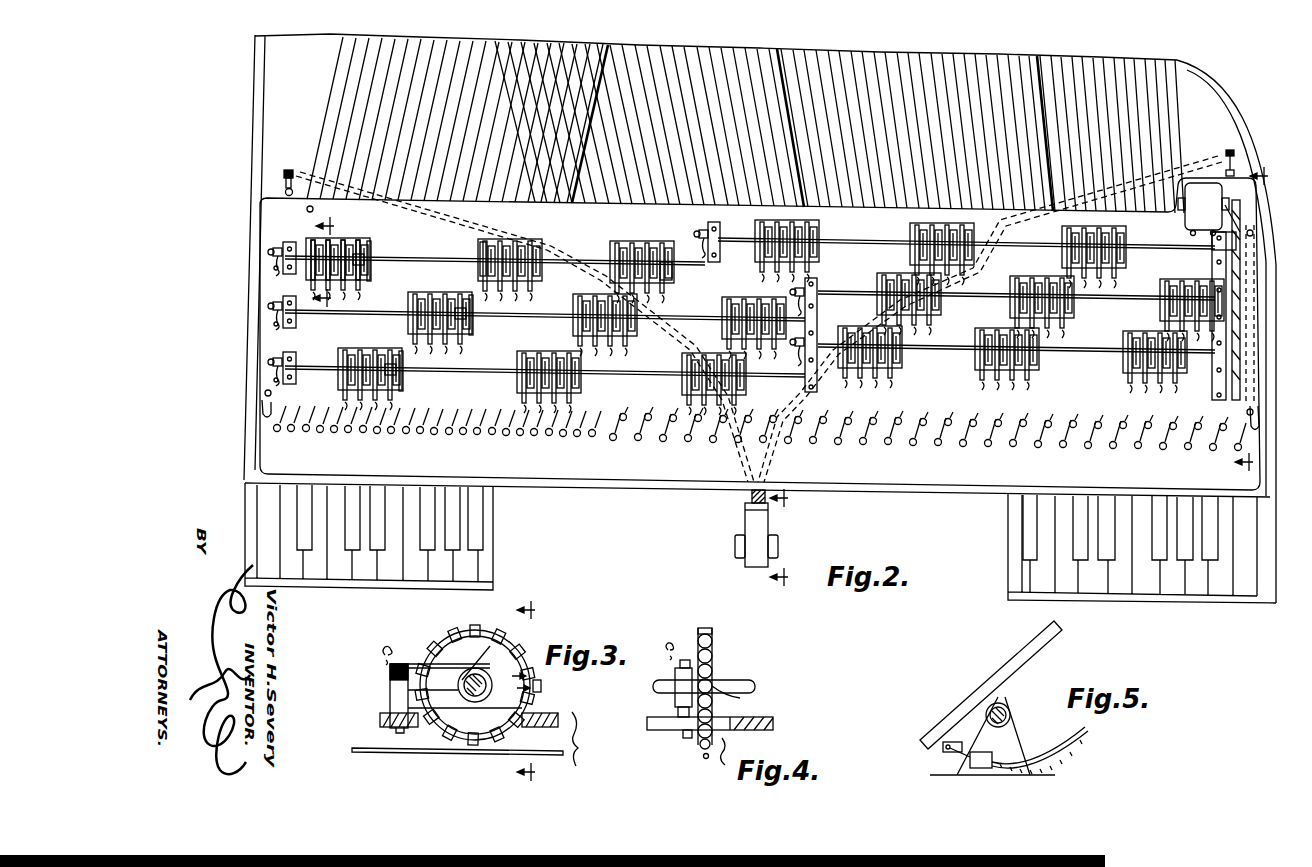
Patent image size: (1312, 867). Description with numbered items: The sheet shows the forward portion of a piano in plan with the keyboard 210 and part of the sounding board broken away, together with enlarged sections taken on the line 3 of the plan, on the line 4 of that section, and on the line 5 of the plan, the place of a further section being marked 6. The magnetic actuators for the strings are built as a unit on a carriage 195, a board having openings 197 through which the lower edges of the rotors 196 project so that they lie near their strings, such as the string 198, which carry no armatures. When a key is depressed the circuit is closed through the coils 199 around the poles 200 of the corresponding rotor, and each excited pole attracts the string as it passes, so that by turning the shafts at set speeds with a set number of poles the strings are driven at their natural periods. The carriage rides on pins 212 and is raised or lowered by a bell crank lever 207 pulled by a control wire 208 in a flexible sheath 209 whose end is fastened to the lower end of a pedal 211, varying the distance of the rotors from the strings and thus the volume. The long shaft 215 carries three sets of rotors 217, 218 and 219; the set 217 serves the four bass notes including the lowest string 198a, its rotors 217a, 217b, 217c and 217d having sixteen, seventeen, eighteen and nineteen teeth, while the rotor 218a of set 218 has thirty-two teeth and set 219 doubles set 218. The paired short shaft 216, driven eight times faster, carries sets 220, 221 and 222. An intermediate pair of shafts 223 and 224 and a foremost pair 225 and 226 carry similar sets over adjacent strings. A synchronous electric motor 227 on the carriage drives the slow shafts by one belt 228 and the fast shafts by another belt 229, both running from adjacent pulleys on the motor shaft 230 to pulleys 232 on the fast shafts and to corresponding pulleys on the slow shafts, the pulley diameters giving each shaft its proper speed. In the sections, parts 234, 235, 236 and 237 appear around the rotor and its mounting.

In FIG. 2, the carriage 195 is at (896, 228).
In FIG. 3, the carriage 195 is at (545, 713).
In FIG. 4, the carriage 195 is at (652, 717).
In FIG. 2, the rotors 196 is at (662, 234).
In FIG. 3, the rotors 196 is at (541, 679).
In FIG. 2, the openings 197 is at (552, 250).
In FIG. 3, the openings 197 is at (520, 727).
In FIG. 4, the openings 197 is at (736, 731).
In FIG. 2, the string 198 is at (726, 32).
In FIG. 3, the string 198 is at (475, 757).
In FIG. 2, the string producing lowest note 198a is at (352, 86).
In FIG. 3, the coils 199 is at (462, 632).
In FIG. 4, the coils 199 is at (714, 648).
In FIG. 3, the poles 200 is at (452, 636).
In FIG. 4, the poles 200 is at (740, 700).
In FIG. 2, the bell crank lever 207 is at (285, 175).
In FIG. 5, the control wire 208 is at (1086, 727).
In FIG. 2, the flexible sheath 209 is at (752, 496).
In FIG. 5, the flexible sheath 209 is at (1046, 748).
In FIG. 2, the keyboard 210 is at (1146, 592).
In FIG. 2, the pedal 211 is at (756, 520).
In FIG. 5, the pedal 211 is at (1027, 652).
In FIG. 2, the pins 212 is at (1246, 412).
In FIG. 2, the long shaft 215 is at (1004, 276).
In FIG. 3, the long shaft 215 is at (472, 700).
In FIG. 4, the long shaft 215 is at (732, 684).
In FIG. 2, the short shaft 216 is at (992, 246).
In FIG. 2, the set of rotors 217 is at (306, 248).
In FIG. 2, the rotor 217a is at (303, 283).
In FIG. 2, the rotor 217b is at (335, 247).
In FIG. 2, the rotor 217c is at (348, 246).
In FIG. 2, the rotor 217d is at (370, 248).
In FIG. 2, the set of rotors 218 is at (478, 276).
In FIG. 2, the rotor 218a is at (480, 249).
In FIG. 2, the set of rotors 219 is at (668, 282).
In FIG. 2, the set of rotors 220 is at (758, 228).
In FIG. 2, the set of rotors 221 is at (946, 218).
In FIG. 2, the set of rotors 222 is at (1116, 234).
In FIG. 2, the intermediate shaft 223 is at (966, 329).
In FIG. 2, the intermediate shaft 224 is at (998, 302).
In FIG. 2, the foremost shaft 225 is at (944, 384).
In FIG. 2, the foremost shaft 226 is at (946, 354).
In FIG. 2, the electric motor 227 is at (1204, 183).
In FIG. 2, the belt 228 is at (1212, 240).
In FIG. 2, the belt 229 is at (1242, 210).
In FIG. 2, the motor shaft 230 is at (1243, 163).
In FIG. 2, the pulleys 232 is at (1212, 265).
In FIG. 2, the hammer arm 234 is at (400, 370).
In FIG. 3, the hammer arm 234 is at (492, 664).
In FIG. 4, the hammer arm 234 is at (677, 678).
In FIG. 2, the bearing 235 is at (1214, 366).
In FIG. 2, the pin 236 is at (404, 386).
In FIG. 3, the pin 236 is at (478, 668).
In FIG. 4, the pin 236 is at (686, 660).
In FIG. 2, the spring 237 is at (800, 360).
In FIG. 2, the section line 3— 3 is at (329, 262).
In FIG. 3, the section line 4— 4 is at (553, 772).
In FIG. 2, the section line 5— 5 is at (784, 537).
In FIG. 2, the section line 6- 6 is at (1268, 176).